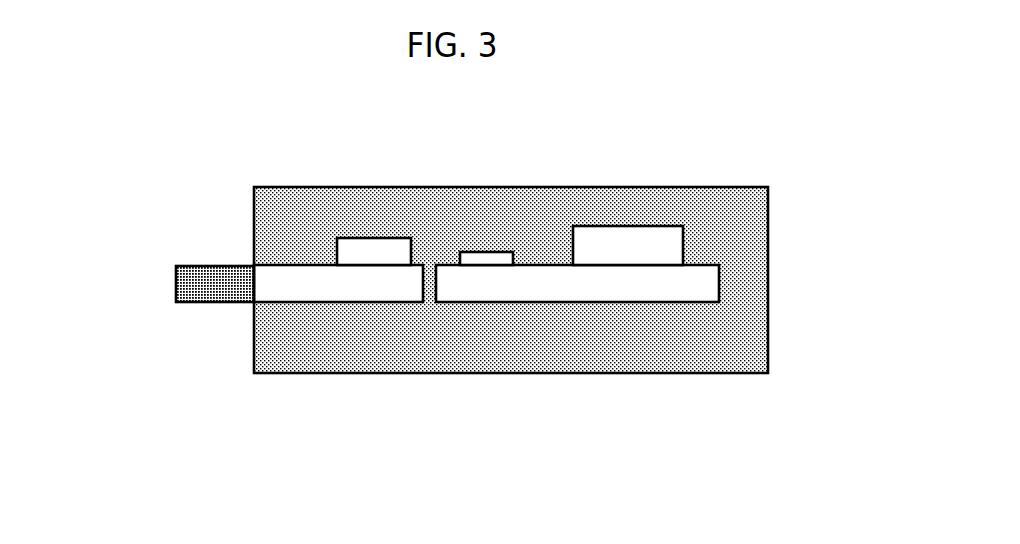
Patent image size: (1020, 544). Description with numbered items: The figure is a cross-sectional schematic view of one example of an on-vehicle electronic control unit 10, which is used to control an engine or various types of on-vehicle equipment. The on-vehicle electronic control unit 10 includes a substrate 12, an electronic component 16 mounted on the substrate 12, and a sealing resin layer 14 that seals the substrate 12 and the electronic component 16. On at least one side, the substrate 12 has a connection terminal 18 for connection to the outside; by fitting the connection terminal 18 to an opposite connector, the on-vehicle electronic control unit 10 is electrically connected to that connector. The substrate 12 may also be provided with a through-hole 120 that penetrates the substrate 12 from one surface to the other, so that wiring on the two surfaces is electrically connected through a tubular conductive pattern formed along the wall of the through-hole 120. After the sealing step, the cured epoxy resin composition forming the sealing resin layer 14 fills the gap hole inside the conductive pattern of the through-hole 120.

The on-vehicle electronic control unit 10 is at (710, 460).
The substrate 12 is at (710, 292).
The sealing resin layer 14 is at (757, 237).
The electronic component 16 is at (632, 233).
The connection terminal 18 is at (185, 290).
The through-hole 120 is at (430, 277).